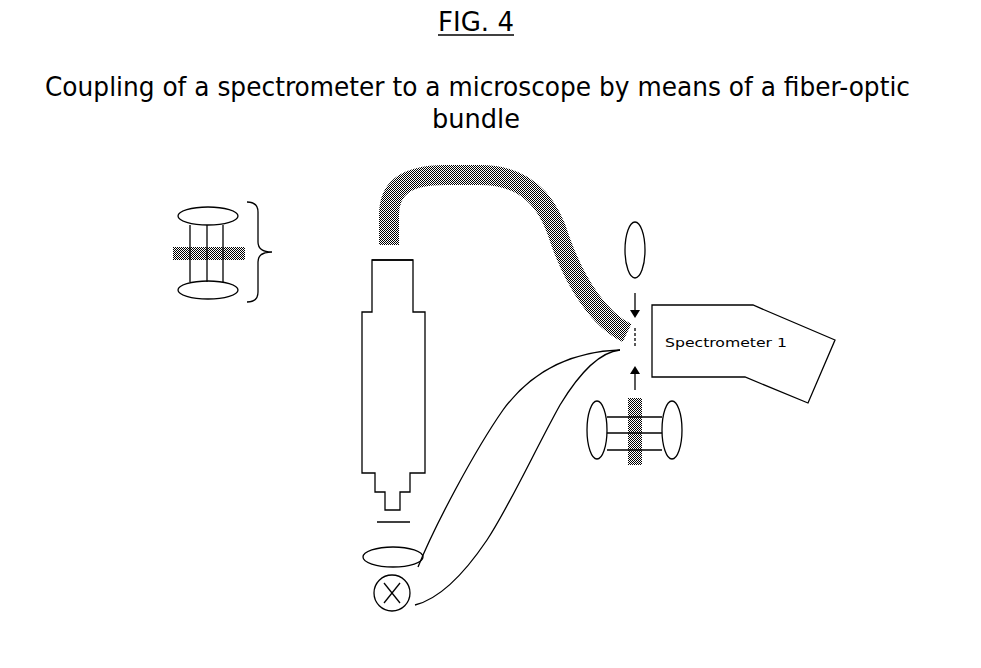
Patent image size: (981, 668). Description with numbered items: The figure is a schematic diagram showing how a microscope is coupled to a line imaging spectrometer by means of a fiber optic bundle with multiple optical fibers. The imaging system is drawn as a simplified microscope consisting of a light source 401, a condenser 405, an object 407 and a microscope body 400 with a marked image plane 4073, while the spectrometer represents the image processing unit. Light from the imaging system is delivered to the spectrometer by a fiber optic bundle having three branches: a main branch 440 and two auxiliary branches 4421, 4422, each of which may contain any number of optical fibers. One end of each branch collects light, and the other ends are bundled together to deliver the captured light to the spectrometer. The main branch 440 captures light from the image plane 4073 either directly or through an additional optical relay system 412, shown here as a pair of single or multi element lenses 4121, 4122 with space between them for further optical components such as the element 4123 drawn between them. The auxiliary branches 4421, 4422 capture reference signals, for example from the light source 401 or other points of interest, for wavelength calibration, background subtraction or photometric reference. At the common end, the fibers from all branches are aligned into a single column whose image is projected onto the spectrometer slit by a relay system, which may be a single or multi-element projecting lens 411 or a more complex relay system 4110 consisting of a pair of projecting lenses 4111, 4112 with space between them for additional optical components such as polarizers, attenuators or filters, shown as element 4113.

The additional optical relay system 412 is at (232, 248).
The single or multi element lens 4121 is at (180, 288).
The single or multi element lens 4122 is at (180, 208).
The filter / diaphragm 4123 is at (173, 252).
The main branch 440 is at (471, 183).
The marked image plane 4073 is at (375, 255).
The microscope body 400 is at (393, 385).
The object 407 is at (368, 522).
The condenser 405 is at (363, 557).
The light source 401 is at (364, 593).
The auxiliary branch 4421 is at (500, 420).
The auxiliary branch 4422 is at (512, 510).
The projecting lens 411 is at (643, 228).
The relay system 4110 is at (648, 491).
The projecting lens 4111 is at (585, 457).
The projecting lens 4112 is at (683, 455).
The filter / diaphragm 4113 is at (640, 451).